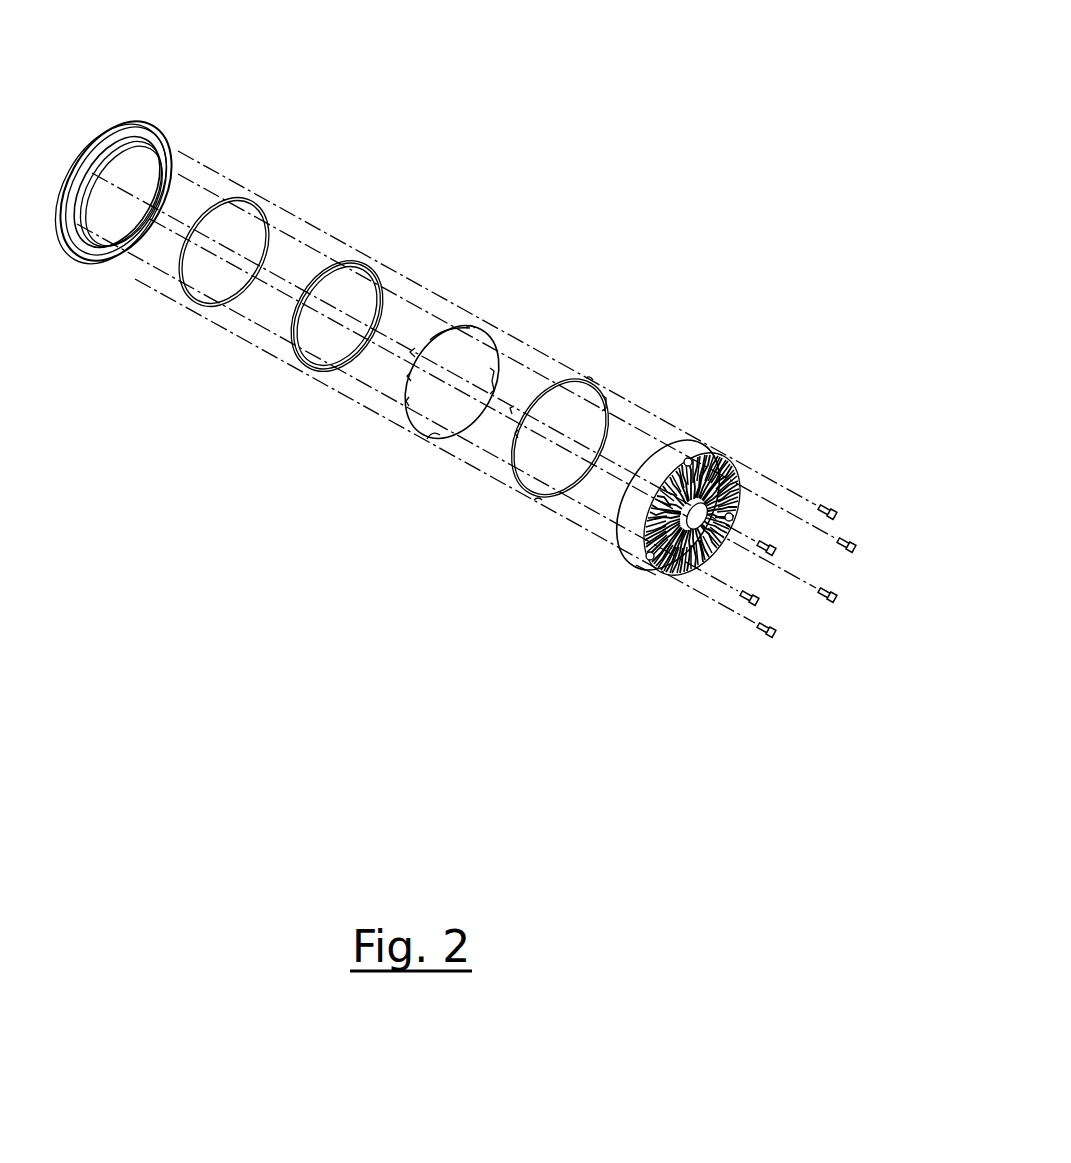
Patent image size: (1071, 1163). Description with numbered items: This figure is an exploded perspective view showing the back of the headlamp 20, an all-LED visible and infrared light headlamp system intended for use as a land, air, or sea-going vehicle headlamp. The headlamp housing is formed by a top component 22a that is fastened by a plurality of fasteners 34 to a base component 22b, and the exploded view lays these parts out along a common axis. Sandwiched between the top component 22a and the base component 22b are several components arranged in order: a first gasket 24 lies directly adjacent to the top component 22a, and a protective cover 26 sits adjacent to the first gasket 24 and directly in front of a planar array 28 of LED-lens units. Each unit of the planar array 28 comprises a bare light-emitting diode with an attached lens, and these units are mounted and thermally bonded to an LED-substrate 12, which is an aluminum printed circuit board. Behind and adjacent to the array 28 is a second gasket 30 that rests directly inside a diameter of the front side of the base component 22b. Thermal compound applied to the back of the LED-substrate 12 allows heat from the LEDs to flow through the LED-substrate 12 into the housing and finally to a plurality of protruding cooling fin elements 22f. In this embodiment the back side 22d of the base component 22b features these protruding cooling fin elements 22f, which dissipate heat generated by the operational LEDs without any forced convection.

The headlamp 20 is at (172, 620).
The top component 22a is at (124, 121).
The base component 22b is at (635, 534).
The back side 22d is at (651, 578).
The protruding cooling fin elements 22f is at (635, 565).
The first gasket 24 is at (190, 305).
The protective cover 26 is at (310, 372).
The LED-substrate 12 is at (432, 440).
The planar array 28 is at (462, 325).
The second gasket 30 is at (535, 502).
The fasteners 34 is at (773, 634).